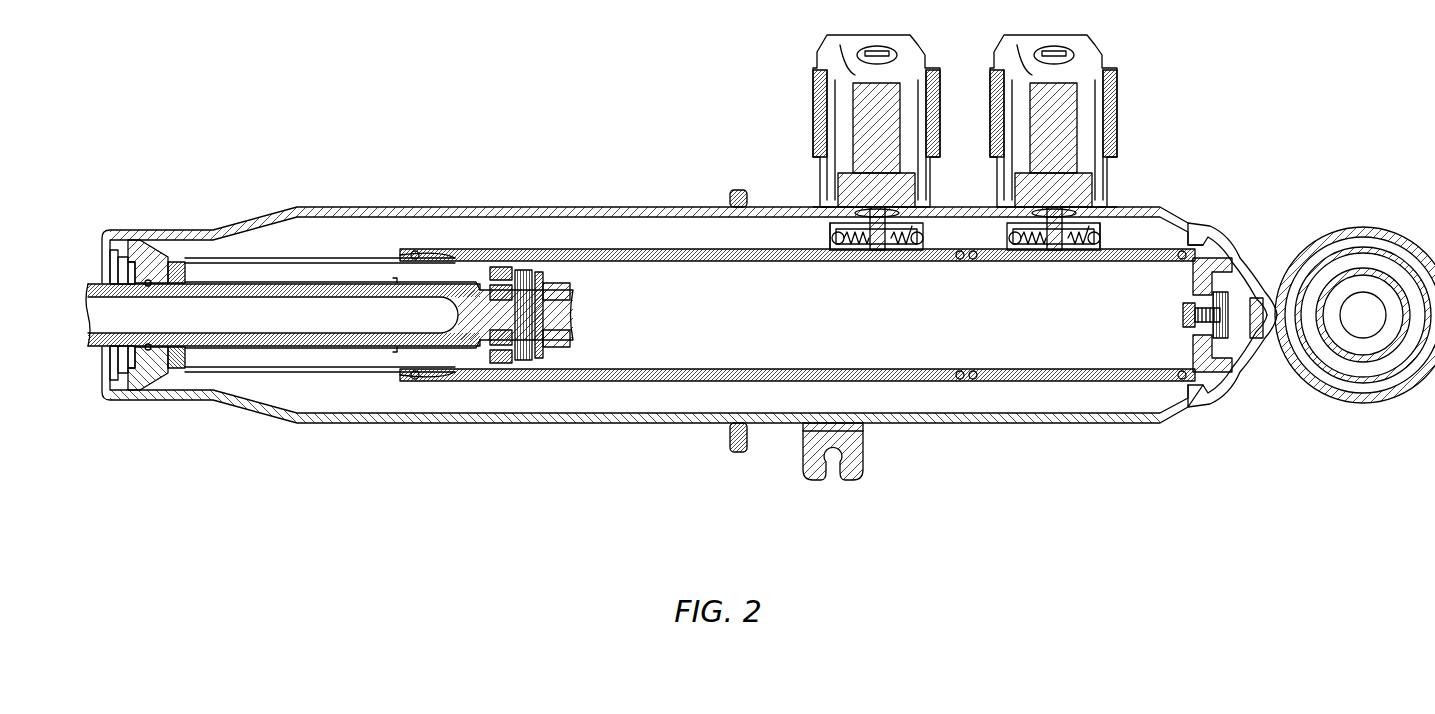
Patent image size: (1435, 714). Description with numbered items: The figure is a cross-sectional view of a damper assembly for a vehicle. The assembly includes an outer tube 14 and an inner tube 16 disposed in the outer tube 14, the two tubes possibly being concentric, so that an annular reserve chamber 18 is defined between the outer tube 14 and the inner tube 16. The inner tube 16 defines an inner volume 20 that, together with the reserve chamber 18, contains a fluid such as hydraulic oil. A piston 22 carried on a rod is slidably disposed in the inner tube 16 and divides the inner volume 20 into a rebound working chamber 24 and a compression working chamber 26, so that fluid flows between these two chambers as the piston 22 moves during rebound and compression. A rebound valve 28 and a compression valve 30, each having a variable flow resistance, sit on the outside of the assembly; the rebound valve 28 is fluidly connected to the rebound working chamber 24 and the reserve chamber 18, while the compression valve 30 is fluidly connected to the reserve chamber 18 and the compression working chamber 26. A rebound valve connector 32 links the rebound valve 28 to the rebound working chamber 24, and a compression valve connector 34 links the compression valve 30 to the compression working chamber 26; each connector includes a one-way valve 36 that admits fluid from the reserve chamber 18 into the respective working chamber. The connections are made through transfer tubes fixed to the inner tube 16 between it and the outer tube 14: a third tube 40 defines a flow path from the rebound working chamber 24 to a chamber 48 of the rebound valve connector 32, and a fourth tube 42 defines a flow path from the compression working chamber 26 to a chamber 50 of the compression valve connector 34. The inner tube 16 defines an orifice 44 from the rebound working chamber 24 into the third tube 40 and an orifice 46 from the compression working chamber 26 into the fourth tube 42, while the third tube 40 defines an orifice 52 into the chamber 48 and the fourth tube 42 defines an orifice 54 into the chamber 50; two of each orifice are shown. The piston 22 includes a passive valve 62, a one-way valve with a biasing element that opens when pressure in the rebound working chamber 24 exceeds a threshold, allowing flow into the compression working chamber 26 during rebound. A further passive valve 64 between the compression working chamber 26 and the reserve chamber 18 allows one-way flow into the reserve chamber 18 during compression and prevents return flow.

The outer tube 14 is at (508, 207).
The inner tube 16 is at (298, 257).
The reserve chamber 18 is at (568, 232).
The inner volume 20 is at (650, 330).
The piston 22 is at (497, 358).
The rebound working chamber 24 is at (338, 355).
The compression working chamber 26 is at (1052, 330).
The rebound valve 28 is at (795, 97).
The compression valve 30 is at (1135, 97).
The rebound valve connector 32 is at (813, 232).
The compression valve connector 34 is at (1110, 218).
The one-way valve 36 is at (813, 244).
The third tube 40 is at (653, 249).
The fourth tube 42 is at (1160, 230).
The orifice 44 is at (455, 258).
The orifice 46 is at (1143, 372).
The chamber of the rebound valve connector 48 is at (877, 241).
The chamber of the compression valve connector 50 is at (1060, 241).
The orifice 52 is at (884, 241).
The orifice 54 is at (1053, 241).
The passive valve 62 is at (527, 358).
The passive valve 64 is at (1230, 337).